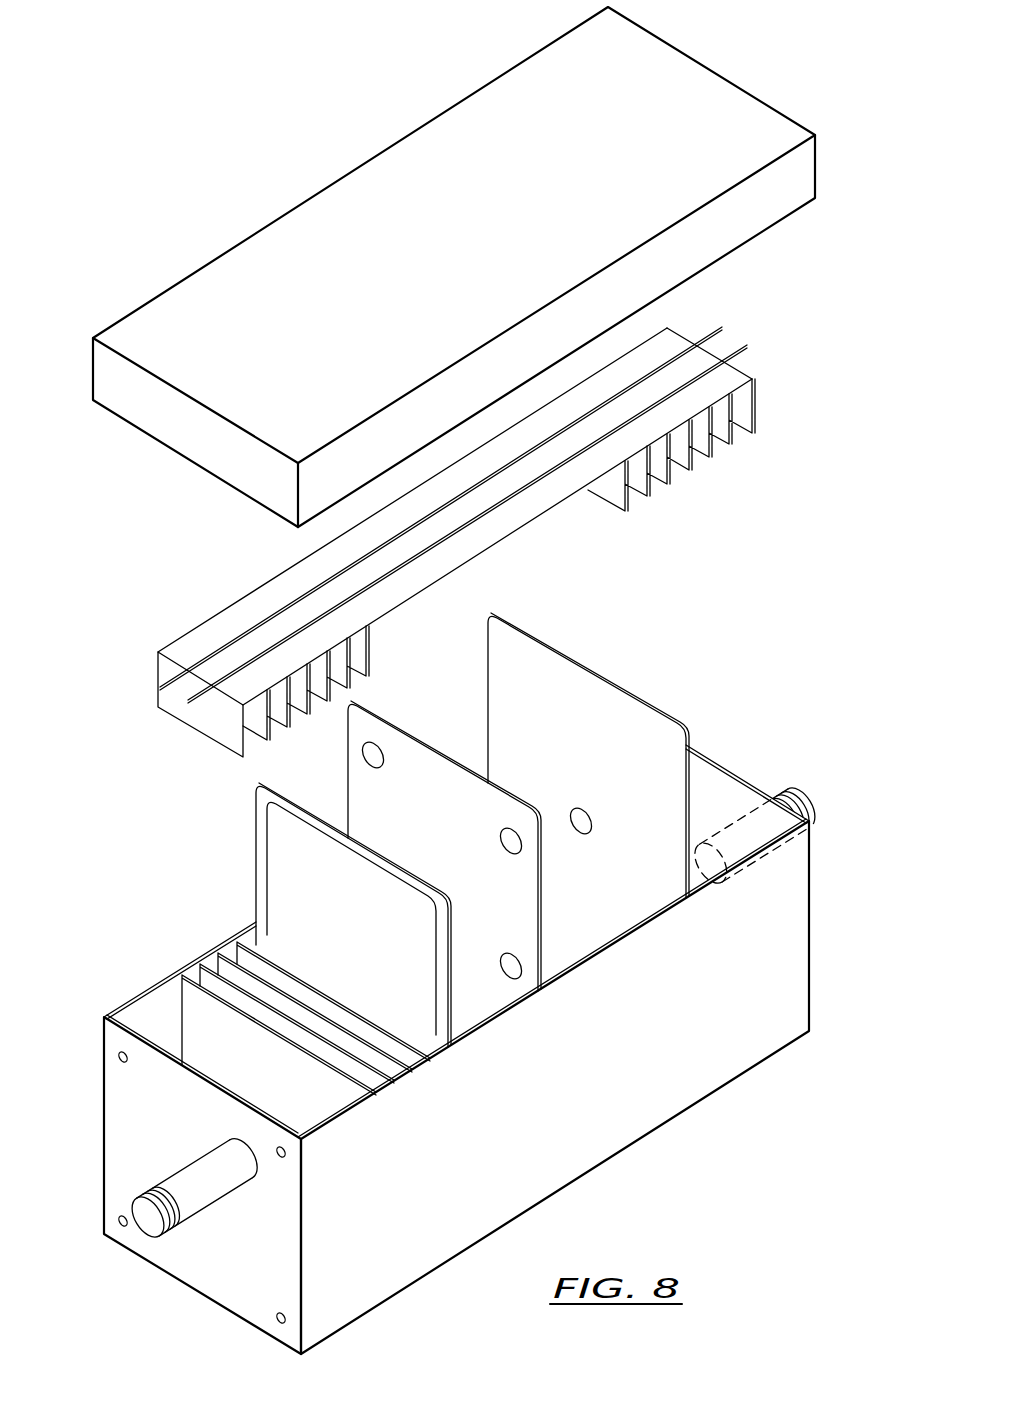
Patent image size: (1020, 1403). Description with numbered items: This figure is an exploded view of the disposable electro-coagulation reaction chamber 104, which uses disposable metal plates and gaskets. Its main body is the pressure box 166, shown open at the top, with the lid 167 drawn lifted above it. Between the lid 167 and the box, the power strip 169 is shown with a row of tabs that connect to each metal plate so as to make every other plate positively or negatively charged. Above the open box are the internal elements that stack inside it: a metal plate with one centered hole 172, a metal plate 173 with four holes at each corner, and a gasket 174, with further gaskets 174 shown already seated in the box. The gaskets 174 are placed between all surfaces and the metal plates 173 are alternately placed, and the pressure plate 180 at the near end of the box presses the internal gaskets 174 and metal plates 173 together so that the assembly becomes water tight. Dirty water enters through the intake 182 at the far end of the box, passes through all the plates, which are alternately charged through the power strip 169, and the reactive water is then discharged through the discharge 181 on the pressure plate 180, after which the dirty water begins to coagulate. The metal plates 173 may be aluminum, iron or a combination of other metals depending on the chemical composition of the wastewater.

The electro-coagulation reaction chamber 104 is at (471, 1049).
The pressure box 166 is at (590, 1152).
The lid 167 is at (268, 256).
The power strip 169 is at (213, 725).
The metal plate with one centered hole 172 is at (622, 688).
The metal plate with four holes 173 is at (448, 752).
The gasket 174 is at (255, 878).
The pressure plate 180 is at (205, 1266).
The discharge 181 is at (185, 1188).
The intake 182 is at (818, 809).